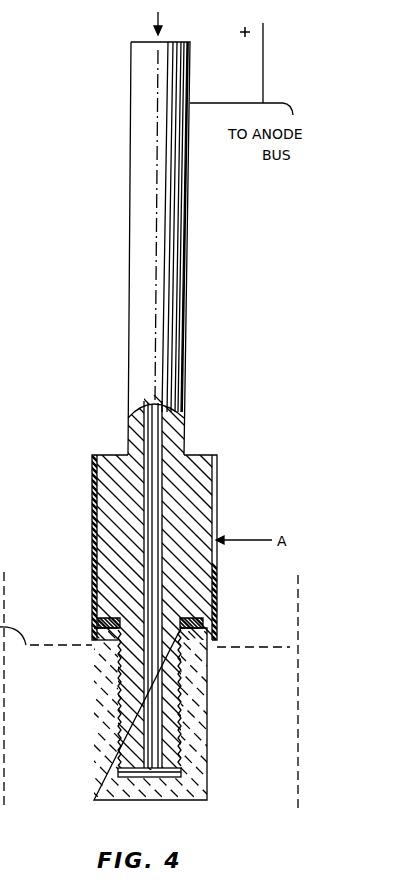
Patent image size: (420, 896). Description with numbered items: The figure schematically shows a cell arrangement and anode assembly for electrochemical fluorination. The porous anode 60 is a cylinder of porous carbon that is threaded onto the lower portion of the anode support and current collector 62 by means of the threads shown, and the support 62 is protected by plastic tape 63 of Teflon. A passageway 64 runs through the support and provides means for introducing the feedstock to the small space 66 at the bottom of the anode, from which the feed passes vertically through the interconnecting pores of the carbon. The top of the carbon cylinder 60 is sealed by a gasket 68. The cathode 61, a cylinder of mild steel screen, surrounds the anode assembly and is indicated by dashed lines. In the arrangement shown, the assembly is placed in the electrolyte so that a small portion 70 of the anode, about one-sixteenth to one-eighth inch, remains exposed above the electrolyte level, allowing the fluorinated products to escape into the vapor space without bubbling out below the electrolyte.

The porous anode 60 is at (94, 699).
The cathode 61 is at (298, 697).
The anode support and current collector 62 is at (129, 196).
The plastic tape 63 is at (217, 481).
The passageway 64 is at (157, 441).
The small space 66 is at (175, 772).
The gasket 68 is at (200, 617).
The small portion of the anode exposed above the electrolyte 70 is at (95, 641).